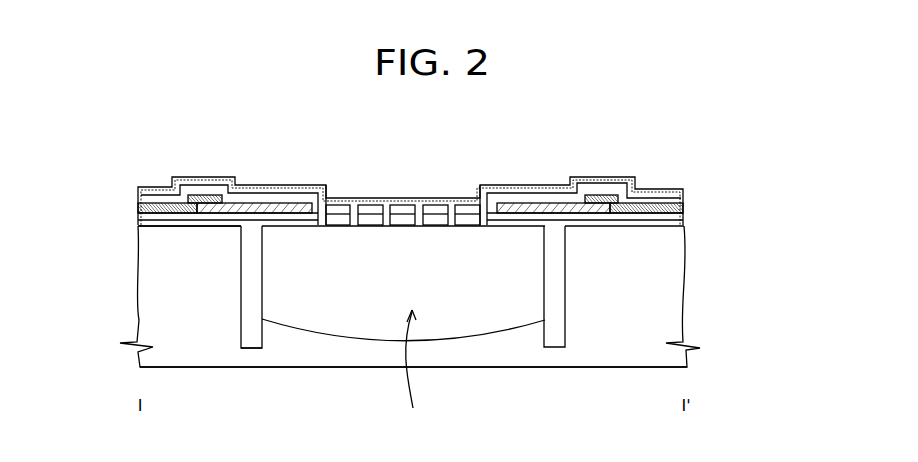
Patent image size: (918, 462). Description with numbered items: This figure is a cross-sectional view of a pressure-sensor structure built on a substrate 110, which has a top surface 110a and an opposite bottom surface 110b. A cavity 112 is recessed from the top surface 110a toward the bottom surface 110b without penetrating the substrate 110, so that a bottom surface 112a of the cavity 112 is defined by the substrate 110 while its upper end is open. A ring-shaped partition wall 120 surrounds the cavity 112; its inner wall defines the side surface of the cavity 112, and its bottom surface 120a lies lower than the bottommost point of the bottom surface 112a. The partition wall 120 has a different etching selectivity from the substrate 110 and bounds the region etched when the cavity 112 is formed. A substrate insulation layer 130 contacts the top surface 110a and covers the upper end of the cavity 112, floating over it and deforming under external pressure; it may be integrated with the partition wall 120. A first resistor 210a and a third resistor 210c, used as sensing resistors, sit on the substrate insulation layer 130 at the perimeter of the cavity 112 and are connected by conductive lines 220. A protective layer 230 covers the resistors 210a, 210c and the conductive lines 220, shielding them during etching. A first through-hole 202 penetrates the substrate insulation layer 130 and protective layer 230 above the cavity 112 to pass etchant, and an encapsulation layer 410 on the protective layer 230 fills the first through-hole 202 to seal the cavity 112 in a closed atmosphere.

The substrate 110 is at (672, 322).
The top surface 110a is at (157, 225).
The bottom surface 110b is at (155, 367).
The cavity 112 is at (413, 368).
The bottom surface of the cavity 112a is at (368, 338).
The partition wall 120 is at (553, 287).
The bottom surface of the partition wall 120a is at (250, 347).
The substrate insulation layer 130 is at (673, 221).
The first through-hole 202 is at (417, 212).
The first resistor 210a is at (273, 203).
The third resistor 210c is at (540, 203).
The conductive lines 220 is at (682, 209).
The protective layer 230 is at (673, 200).
The encapsulation layer 410 is at (601, 183).